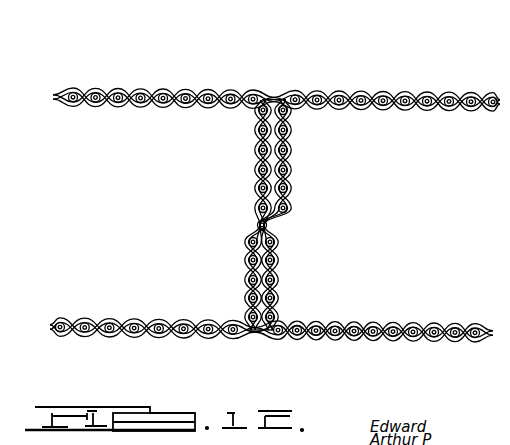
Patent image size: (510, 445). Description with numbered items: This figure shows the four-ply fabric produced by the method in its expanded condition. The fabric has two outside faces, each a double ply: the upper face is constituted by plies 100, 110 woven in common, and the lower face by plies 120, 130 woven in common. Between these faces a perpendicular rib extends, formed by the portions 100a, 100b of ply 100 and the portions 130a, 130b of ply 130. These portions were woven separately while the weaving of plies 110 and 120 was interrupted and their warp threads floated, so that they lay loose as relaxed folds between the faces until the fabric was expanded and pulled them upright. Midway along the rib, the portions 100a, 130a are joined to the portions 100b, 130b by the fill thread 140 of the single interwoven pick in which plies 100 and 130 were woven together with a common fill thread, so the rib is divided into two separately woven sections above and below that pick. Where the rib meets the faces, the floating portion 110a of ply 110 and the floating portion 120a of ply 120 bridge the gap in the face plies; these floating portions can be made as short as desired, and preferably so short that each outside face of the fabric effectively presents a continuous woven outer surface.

The ply 100 is at (276, 75).
The ply 110 is at (457, 61).
The portion of ply 100a is at (290, 114).
The portion of ply 100b is at (244, 114).
The floating portion of ply 110a is at (277, 93).
The fill thread of the interwoven pick 140 is at (268, 227).
The ply 120 is at (271, 354).
The ply 130 is at (470, 367).
The portion of ply 130a is at (285, 235).
The portion of ply 130b is at (242, 235).
The floating portion of ply 120a is at (262, 334).